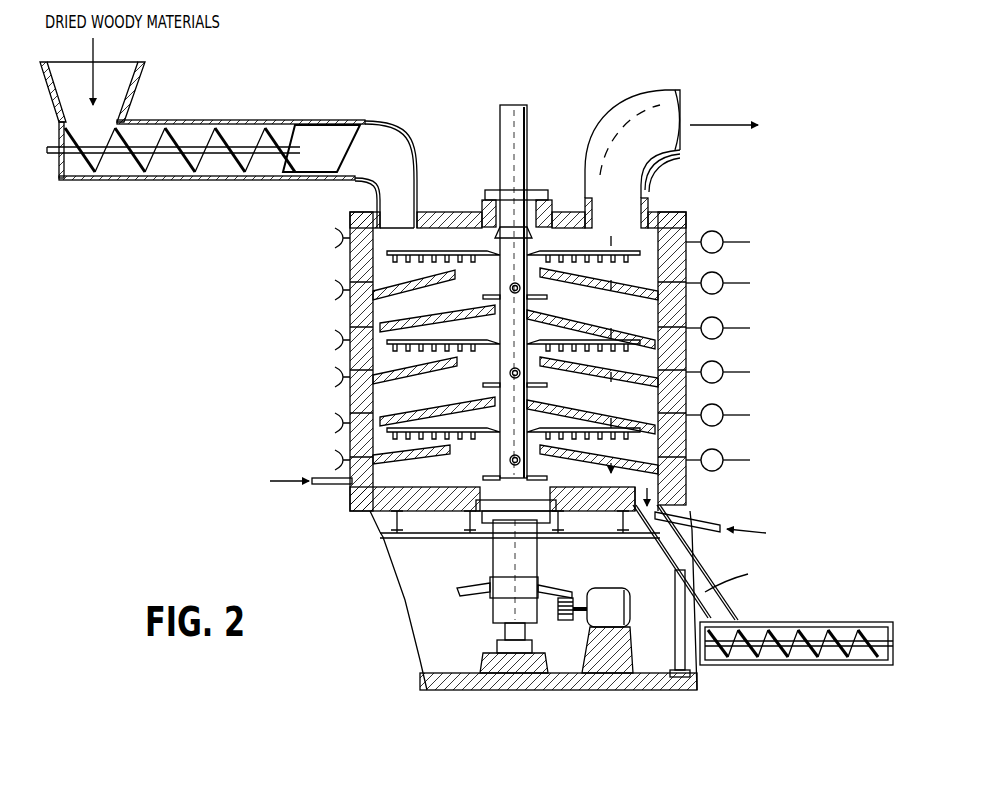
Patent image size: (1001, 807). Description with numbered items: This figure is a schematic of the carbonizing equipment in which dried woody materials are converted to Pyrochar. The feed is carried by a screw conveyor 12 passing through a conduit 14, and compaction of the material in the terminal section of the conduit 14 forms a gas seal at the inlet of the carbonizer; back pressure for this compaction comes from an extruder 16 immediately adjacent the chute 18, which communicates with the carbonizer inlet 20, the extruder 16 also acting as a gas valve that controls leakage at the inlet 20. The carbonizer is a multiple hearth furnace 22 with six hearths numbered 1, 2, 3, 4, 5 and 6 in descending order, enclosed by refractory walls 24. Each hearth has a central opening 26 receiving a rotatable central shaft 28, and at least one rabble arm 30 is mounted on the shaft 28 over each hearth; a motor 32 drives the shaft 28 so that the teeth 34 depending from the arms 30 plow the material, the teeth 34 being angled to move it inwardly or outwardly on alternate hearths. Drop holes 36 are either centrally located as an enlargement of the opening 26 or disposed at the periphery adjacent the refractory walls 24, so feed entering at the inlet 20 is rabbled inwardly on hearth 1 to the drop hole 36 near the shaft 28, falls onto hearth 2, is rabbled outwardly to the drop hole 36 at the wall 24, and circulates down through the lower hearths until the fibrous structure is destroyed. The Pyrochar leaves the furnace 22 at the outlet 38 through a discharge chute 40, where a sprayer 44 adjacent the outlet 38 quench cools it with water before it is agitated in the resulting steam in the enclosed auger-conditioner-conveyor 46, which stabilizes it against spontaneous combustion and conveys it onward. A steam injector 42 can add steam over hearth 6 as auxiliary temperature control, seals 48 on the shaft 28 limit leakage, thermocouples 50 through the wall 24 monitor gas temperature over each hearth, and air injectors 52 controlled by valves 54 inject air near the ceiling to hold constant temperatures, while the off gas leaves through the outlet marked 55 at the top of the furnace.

The hearth 1 is at (421, 251).
The hearth 2 is at (403, 312).
The hearth 3 is at (440, 322).
The hearth 4 is at (403, 397).
The hearth 5 is at (446, 406).
The hearth 6 is at (418, 478).
The screw conveyor 12 is at (166, 132).
The conduit 14 is at (289, 122).
The extruder 16 is at (342, 140).
The chute 18 is at (413, 165).
The carbonizer inlet 20 is at (405, 215).
The multiple hearth furnace 22 is at (767, 352).
The refractory walls 24 is at (348, 260).
The central opening 26 is at (558, 318).
The central shaft 28 is at (515, 342).
The rabble arm 30 is at (522, 289).
The motor 32 is at (612, 590).
The teeth 34 is at (570, 253).
The drop holes 36 is at (348, 314).
The outlet 38 is at (668, 504).
The discharge chute 40 is at (694, 566).
The steam injector 42 is at (322, 486).
The sprayer 44 is at (703, 516).
The auger-conditioner-conveyor 46 is at (770, 622).
The seals 48 is at (546, 196).
The thermocouples 50 is at (340, 365).
The air injectors 52 is at (722, 308).
The valves 54 is at (726, 243).
The gas outlet 55 is at (629, 226).